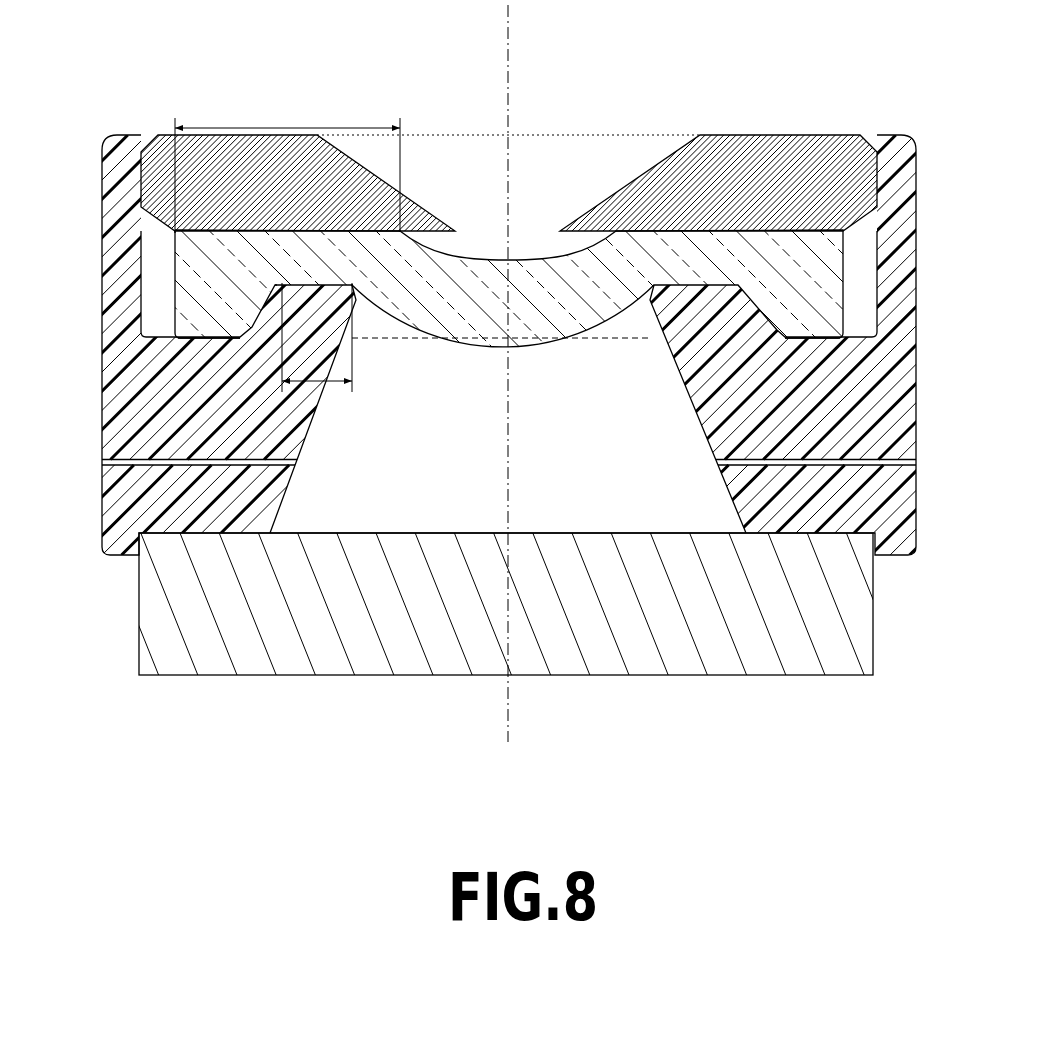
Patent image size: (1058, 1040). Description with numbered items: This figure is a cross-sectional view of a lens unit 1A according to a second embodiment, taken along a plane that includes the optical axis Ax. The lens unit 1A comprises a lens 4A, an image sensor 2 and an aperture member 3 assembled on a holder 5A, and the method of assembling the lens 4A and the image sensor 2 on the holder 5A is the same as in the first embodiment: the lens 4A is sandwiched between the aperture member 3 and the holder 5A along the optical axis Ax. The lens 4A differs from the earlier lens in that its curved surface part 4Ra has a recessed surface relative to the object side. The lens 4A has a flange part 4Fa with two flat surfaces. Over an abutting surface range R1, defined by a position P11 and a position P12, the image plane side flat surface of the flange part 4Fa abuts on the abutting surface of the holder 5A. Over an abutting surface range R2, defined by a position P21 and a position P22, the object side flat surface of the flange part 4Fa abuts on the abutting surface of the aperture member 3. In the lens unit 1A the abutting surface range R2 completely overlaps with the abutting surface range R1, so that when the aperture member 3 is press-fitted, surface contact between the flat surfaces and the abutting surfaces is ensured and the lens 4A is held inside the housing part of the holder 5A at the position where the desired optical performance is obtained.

The lens unit 1A is at (529, 406).
The image sensor 2 is at (212, 620).
The aperture member 3 is at (777, 135).
The lens 4A is at (503, 289).
The flange part 4Fa is at (509, 312).
The curved surface part 4Ra is at (562, 312).
The holder 5A is at (130, 445).
The position P11 is at (277, 285).
The position P12 is at (352, 285).
The position P21 is at (175, 232).
The position P22 is at (400, 231).
The abutting surface range R1 is at (317, 337).
The abutting surface range R2 is at (287, 167).
The optical axis Ax is at (510, 22).